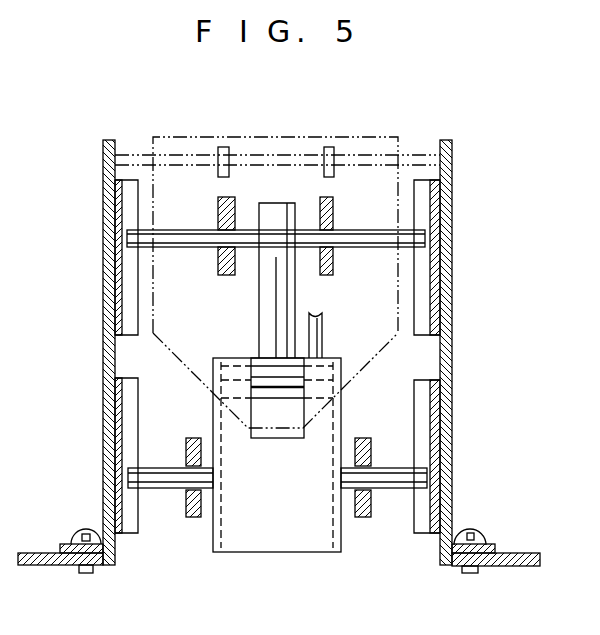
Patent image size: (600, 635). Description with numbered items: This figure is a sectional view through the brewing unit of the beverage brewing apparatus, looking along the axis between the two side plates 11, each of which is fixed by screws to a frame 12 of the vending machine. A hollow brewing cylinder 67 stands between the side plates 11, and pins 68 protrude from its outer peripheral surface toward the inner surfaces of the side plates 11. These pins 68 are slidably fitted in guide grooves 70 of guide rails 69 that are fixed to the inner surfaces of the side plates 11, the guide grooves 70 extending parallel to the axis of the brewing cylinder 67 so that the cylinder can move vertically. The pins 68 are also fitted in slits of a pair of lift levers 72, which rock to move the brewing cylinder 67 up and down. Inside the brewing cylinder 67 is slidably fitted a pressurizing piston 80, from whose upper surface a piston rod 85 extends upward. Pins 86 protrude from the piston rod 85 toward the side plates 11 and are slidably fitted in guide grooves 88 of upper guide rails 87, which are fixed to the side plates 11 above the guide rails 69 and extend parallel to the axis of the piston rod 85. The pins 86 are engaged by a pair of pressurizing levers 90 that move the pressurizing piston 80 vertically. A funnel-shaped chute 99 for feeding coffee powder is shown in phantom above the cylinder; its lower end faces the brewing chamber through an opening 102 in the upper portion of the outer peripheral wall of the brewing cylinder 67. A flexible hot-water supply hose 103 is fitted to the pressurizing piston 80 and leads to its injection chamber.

The side plate 11 is at (107, 350).
The frame 12 is at (522, 567).
The brewing cylinder 67 is at (278, 537).
The pins 68 is at (162, 486).
The guide rails 69 is at (140, 410).
The guide grooves 70 is at (130, 390).
The lift levers 72 is at (195, 519).
The pressurizing piston 80 is at (330, 375).
The piston rod 85 is at (259, 293).
The pins 86 is at (183, 231).
The guide rails 87 is at (138, 180).
The guide grooves 88 is at (122, 207).
The pressurizing levers 90 is at (234, 208).
The chute 99 is at (341, 136).
The opening 102 is at (253, 437).
The hot-water supply hose 103 is at (322, 324).